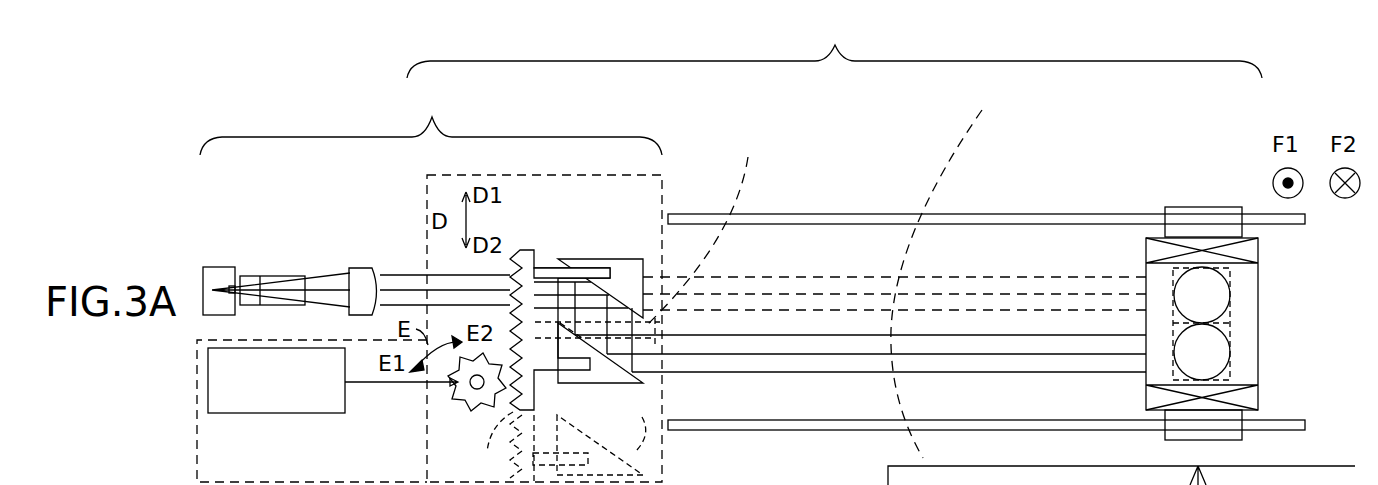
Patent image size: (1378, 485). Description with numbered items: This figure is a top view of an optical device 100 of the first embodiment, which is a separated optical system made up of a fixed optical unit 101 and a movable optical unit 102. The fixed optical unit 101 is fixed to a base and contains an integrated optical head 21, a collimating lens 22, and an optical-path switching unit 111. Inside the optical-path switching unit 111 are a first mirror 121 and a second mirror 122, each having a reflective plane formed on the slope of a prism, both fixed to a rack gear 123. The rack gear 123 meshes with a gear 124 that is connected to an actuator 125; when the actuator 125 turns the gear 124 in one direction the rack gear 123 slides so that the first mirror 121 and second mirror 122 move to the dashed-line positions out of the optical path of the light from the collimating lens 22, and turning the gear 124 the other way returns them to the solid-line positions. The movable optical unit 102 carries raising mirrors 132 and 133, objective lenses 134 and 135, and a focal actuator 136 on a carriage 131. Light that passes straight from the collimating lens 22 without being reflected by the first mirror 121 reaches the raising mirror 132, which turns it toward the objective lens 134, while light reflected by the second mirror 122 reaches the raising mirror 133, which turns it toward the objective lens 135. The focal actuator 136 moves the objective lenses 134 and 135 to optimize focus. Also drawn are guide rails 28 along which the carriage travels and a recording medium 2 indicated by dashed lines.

The optical device 100 is at (834, 43).
The fixed optical unit 101 is at (431, 117).
The optical-path switching unit 111 is at (477, 176).
The first mirror 121 is at (643, 258).
The second mirror 122 is at (594, 385).
The rack gear 123 is at (493, 442).
The gear 124 is at (447, 403).
The actuator 125 is at (262, 413).
The integrated optical head 21 is at (256, 280).
The collimating lens 22 is at (366, 268).
The guide rail 28 is at (1025, 214).
The recording medium 2 is at (920, 166).
The movable optical unit 102 is at (1205, 207).
The carriage 131 is at (1150, 385).
The raising mirror 132 is at (1238, 276).
The raising mirror 133 is at (1238, 333).
The objective lens 134 is at (1240, 303).
The objective lens 135 is at (1244, 378).
The focal actuator 136 is at (1260, 392).